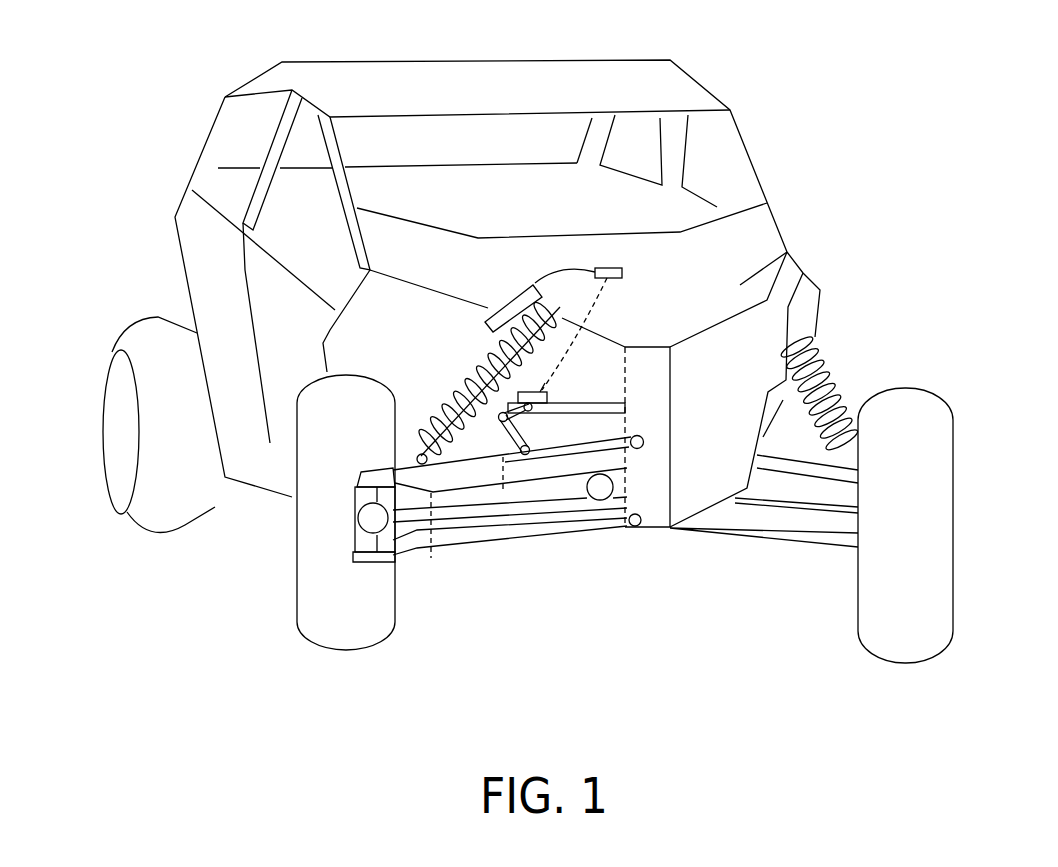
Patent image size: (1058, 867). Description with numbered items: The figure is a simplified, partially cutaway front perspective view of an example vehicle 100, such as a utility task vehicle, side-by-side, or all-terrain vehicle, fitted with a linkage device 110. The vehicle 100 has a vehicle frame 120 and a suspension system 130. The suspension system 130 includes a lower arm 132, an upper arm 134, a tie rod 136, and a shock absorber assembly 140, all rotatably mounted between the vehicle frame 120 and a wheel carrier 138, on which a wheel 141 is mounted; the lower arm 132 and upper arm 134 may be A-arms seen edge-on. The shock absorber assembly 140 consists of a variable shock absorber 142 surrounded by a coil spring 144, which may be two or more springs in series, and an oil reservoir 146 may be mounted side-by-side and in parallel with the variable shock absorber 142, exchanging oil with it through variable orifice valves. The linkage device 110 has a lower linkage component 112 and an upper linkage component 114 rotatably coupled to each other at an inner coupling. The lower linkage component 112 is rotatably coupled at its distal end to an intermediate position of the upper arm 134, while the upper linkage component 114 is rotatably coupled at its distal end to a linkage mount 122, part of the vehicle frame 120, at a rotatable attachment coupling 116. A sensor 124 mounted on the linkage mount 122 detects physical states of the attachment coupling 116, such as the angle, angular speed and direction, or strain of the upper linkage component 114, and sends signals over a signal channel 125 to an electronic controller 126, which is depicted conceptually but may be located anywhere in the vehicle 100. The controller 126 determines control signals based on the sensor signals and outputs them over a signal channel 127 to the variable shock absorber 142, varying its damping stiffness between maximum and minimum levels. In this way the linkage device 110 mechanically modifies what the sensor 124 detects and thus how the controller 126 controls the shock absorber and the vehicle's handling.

The vehicle 100 is at (125, 65).
The linkage device 110 is at (503, 492).
The lower linkage component 112 is at (508, 454).
The upper linkage component 114 is at (517, 418).
The rotatable attachment coupling 116 is at (570, 396).
The vehicle frame 120 is at (663, 528).
The linkage mount 122 is at (612, 379).
The sensor 124 is at (545, 386).
The signal channel 125 is at (600, 314).
The electronic controller 126 is at (623, 274).
The signal channel 127 is at (558, 274).
The suspension system 130 is at (548, 567).
The lower arm 132 is at (587, 530).
The upper arm 134 is at (430, 561).
The tie rod 136 is at (451, 532).
The wheel carrier 138 is at (357, 533).
The shock absorber assembly 140 is at (411, 349).
The wheel 141 is at (298, 573).
The variable shock absorber 142 is at (487, 350).
The coil spring 144 is at (462, 351).
The oil reservoir 146 is at (510, 303).